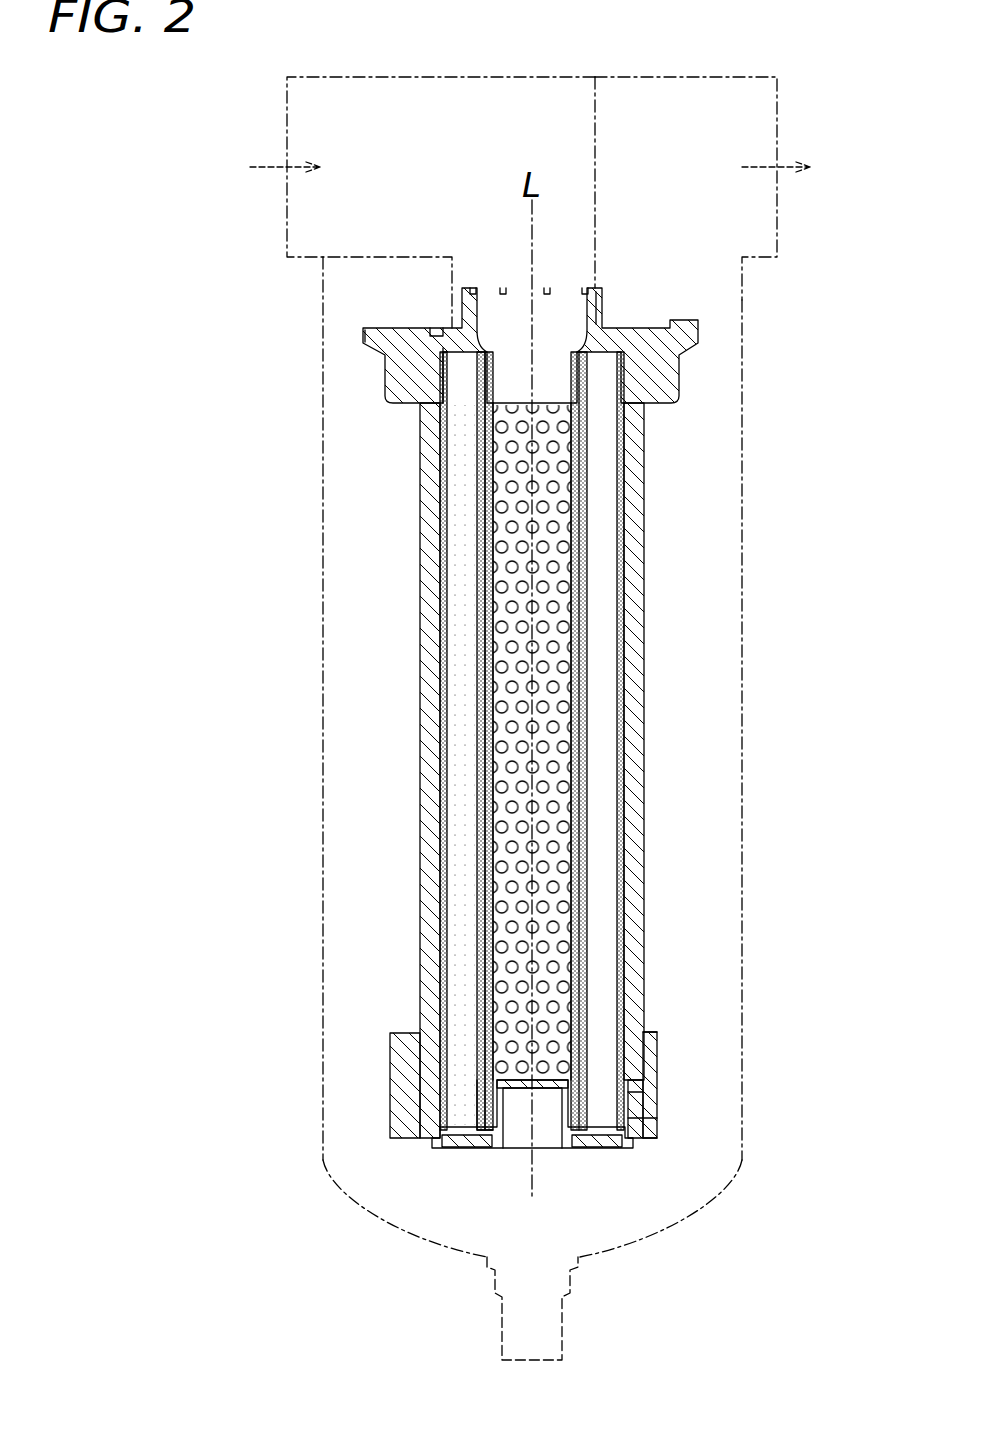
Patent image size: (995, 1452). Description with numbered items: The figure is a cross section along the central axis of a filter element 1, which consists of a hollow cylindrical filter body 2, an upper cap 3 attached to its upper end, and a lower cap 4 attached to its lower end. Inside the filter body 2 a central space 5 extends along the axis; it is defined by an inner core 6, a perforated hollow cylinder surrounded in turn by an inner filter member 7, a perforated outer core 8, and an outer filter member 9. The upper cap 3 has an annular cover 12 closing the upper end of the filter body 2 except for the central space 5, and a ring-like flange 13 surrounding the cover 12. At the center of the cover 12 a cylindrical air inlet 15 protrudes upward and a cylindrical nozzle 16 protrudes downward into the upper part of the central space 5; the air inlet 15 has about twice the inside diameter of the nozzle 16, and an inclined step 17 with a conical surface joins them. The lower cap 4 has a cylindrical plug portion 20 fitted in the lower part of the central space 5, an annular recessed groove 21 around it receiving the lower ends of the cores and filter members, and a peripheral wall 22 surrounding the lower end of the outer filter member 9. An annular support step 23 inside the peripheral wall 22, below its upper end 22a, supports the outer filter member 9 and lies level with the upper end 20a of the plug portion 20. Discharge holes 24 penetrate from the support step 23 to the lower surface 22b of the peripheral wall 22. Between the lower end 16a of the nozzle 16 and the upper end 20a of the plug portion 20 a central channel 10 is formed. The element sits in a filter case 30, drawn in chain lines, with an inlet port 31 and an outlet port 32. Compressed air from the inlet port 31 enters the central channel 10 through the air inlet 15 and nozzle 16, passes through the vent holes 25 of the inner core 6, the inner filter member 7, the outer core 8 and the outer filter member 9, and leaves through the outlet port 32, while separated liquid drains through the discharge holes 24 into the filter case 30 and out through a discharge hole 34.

The filter element 1 is at (707, 623).
The filter body 2 is at (661, 799).
The upper cap 3 is at (673, 322).
The lower cap 4 is at (381, 1132).
The central space 5 is at (487, 565).
The inner core 6 is at (497, 660).
The inner filter member 7 is at (465, 805).
The outer core 8 is at (440, 880).
The outer filter member 9 is at (432, 940).
The central channel 10 is at (567, 672).
The cover 12 is at (443, 348).
The flange 13 is at (363, 335).
The air inlet 15 is at (497, 300).
The nozzle 16 is at (545, 372).
The lower end of the nozzle 16a is at (567, 422).
The inclined step 17 is at (603, 300).
The plug portion 20 is at (490, 1105).
The upper end of the plug portion 20a is at (493, 1048).
The recessed groove 21 is at (652, 1118).
The peripheral wall 22 is at (650, 1045).
The upper end of the peripheral wall 22a is at (650, 1033).
The lower surface of the peripheral wall 22b is at (650, 1137).
The support step 23 is at (652, 1068).
The discharge holes 24 is at (655, 1093).
The vent holes 25 is at (487, 575).
The filter case 30 is at (322, 440).
The inlet port 31 is at (322, 100).
The outlet port 32 is at (738, 100).
The discharge hole 34 is at (530, 1310).